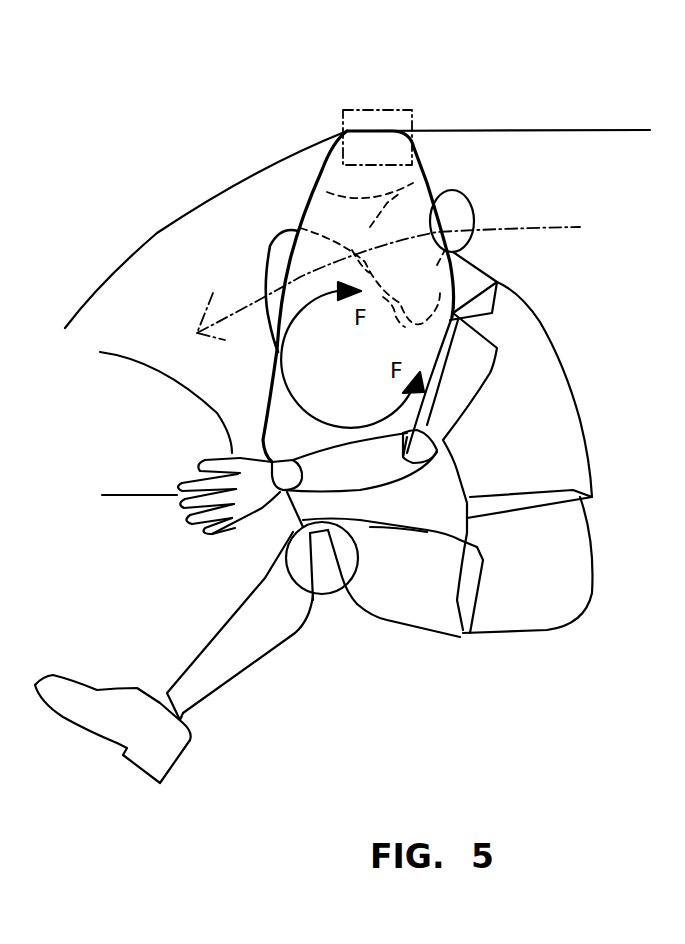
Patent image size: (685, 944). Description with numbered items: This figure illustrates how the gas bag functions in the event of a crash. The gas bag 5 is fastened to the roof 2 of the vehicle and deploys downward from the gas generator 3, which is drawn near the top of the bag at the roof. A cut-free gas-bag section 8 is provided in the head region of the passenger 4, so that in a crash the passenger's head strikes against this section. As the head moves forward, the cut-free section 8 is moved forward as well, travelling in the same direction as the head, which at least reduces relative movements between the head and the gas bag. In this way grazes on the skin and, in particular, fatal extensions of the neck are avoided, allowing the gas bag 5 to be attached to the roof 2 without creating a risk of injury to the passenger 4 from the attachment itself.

The roof 2 is at (480, 130).
The gas generator 3 is at (383, 115).
The passenger 4 is at (547, 410).
The gas bag 5 is at (335, 185).
The cut-free gas-bag section 8 is at (272, 230).